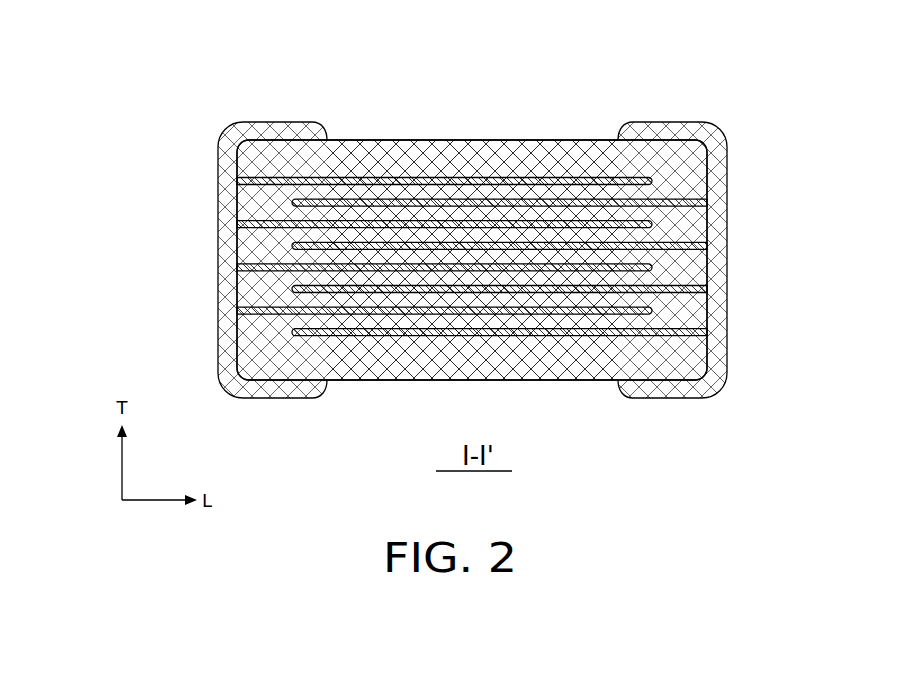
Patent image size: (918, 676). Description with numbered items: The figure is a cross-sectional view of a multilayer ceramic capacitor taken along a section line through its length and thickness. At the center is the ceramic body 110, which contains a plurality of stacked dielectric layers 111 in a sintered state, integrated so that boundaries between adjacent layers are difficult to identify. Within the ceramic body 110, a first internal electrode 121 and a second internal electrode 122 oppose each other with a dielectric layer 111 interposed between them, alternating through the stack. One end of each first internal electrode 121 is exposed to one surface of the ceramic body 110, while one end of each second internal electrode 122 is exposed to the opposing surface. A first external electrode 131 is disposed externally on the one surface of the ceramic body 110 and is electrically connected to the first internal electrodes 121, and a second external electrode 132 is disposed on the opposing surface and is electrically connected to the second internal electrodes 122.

The ceramic body 110 is at (477, 128).
The dielectric layer 111 is at (243, 193).
The first internal electrode 121 is at (272, 178).
The second internal electrode 122 is at (297, 207).
The first external electrode 131 is at (273, 127).
The second external electrode 132 is at (672, 125).